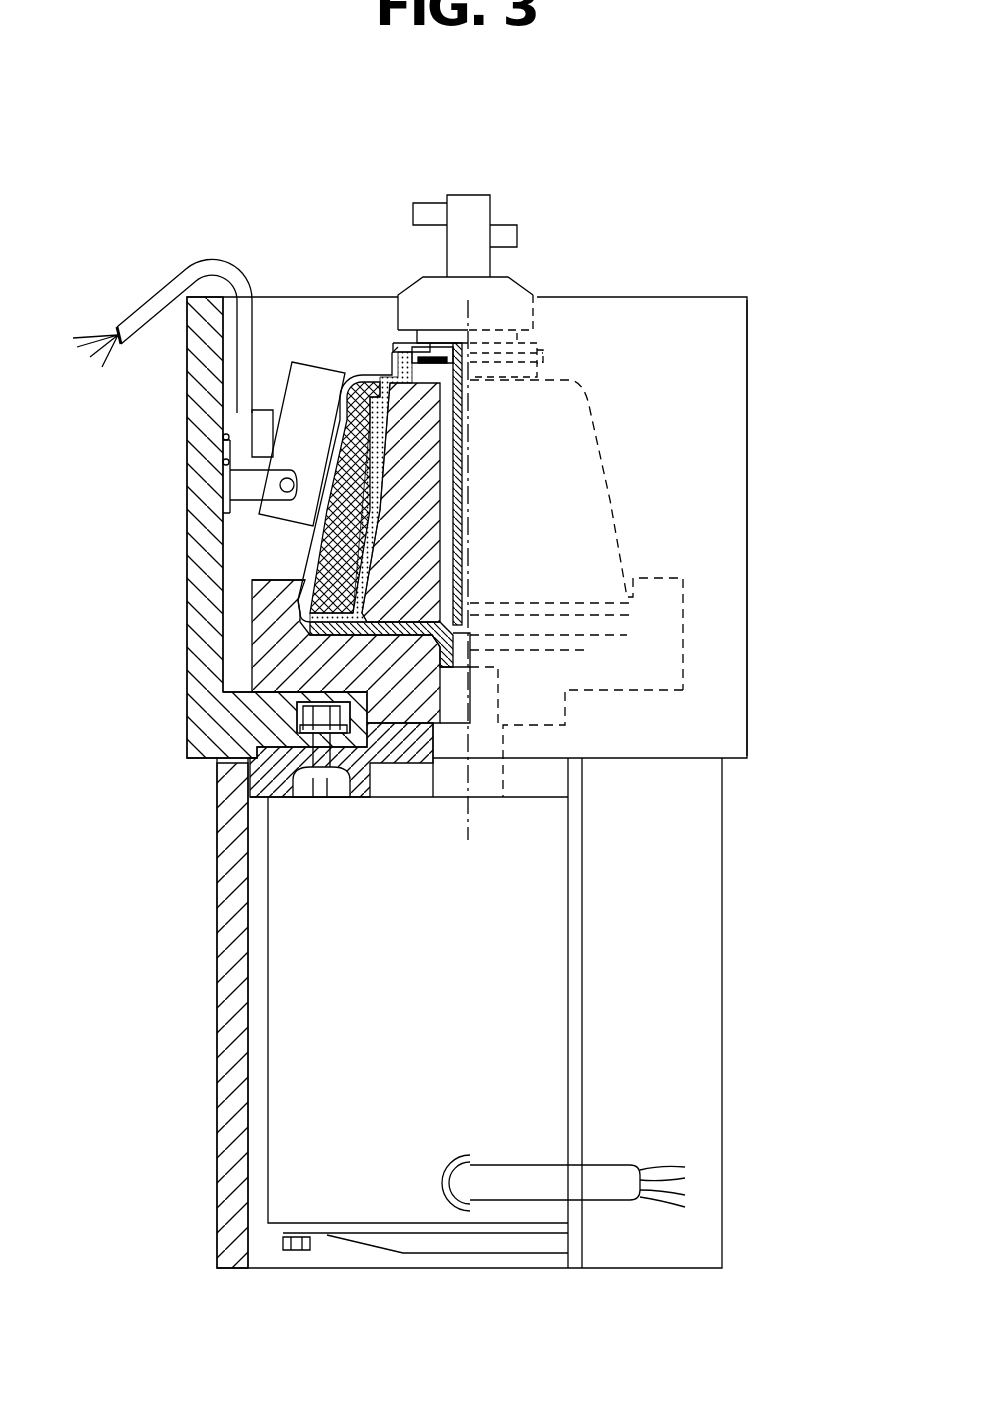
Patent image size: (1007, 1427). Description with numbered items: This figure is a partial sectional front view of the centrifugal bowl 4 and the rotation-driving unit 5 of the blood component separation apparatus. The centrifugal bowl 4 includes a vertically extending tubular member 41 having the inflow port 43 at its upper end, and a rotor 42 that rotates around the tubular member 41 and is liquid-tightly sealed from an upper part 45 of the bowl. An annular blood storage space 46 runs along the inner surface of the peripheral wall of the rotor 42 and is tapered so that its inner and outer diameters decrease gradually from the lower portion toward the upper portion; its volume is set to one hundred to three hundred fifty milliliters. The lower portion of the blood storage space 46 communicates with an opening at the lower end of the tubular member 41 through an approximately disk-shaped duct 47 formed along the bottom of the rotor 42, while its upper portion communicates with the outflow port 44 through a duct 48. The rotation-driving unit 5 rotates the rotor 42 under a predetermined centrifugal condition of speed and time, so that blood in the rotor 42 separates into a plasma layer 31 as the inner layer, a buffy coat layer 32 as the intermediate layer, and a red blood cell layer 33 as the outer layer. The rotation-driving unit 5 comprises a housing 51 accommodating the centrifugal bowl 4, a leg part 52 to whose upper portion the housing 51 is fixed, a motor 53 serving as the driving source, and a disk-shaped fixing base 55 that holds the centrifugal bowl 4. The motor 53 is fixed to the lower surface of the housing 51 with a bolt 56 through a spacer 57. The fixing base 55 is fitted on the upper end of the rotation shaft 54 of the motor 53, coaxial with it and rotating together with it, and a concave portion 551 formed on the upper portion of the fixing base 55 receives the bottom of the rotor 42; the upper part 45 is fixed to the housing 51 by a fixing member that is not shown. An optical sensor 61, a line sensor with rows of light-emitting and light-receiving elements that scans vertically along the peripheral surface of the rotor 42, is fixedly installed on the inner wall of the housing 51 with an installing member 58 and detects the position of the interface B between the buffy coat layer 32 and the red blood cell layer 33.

The centrifugal bowl 4 is at (614, 502).
The rotation-driving unit 5 is at (750, 382).
The plasma layer 31 is at (400, 380).
The buffy coat layer 32 is at (385, 380).
The red blood cell layer 33 is at (305, 540).
The tubular member 41 is at (463, 457).
The rotor 42 is at (217, 530).
The inflow port 43 is at (410, 205).
The outflow port 44 is at (500, 235).
The upper part 45 is at (468, 277).
The blood storage space 46 is at (440, 520).
The duct 47 is at (470, 583).
The duct 48 is at (468, 386).
The housing 51 is at (720, 613).
The leg part 52 is at (230, 1103).
The motor 53 is at (297, 973).
The rotation shaft 54 is at (365, 683).
The fixing base 55 is at (252, 627).
The concave portion 551 is at (300, 572).
The bolt 56 is at (250, 786).
The spacer 57 is at (243, 873).
The installing member 58 is at (245, 483).
The optical sensor 61 is at (293, 425).
The interface B is at (250, 296).